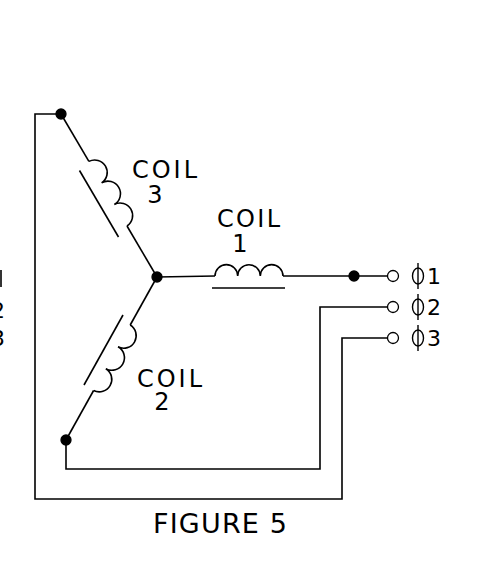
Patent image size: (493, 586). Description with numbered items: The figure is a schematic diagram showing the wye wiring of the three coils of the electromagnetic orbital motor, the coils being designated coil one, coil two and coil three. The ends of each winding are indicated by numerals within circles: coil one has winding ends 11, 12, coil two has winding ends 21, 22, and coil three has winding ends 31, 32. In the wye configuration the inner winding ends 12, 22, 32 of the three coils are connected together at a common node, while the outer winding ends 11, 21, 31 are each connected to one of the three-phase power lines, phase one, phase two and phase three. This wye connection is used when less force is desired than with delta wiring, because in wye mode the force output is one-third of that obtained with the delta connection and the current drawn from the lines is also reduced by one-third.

The coil 1 winding end 11 is at (335, 244).
The coil 1 winding end 12 is at (184, 247).
The coil 2 winding end 21 is at (97, 426).
The coil 2 winding end 22 is at (164, 306).
The coil 3 winding end 31 is at (46, 108).
The coil 3 winding end 32 is at (127, 263).